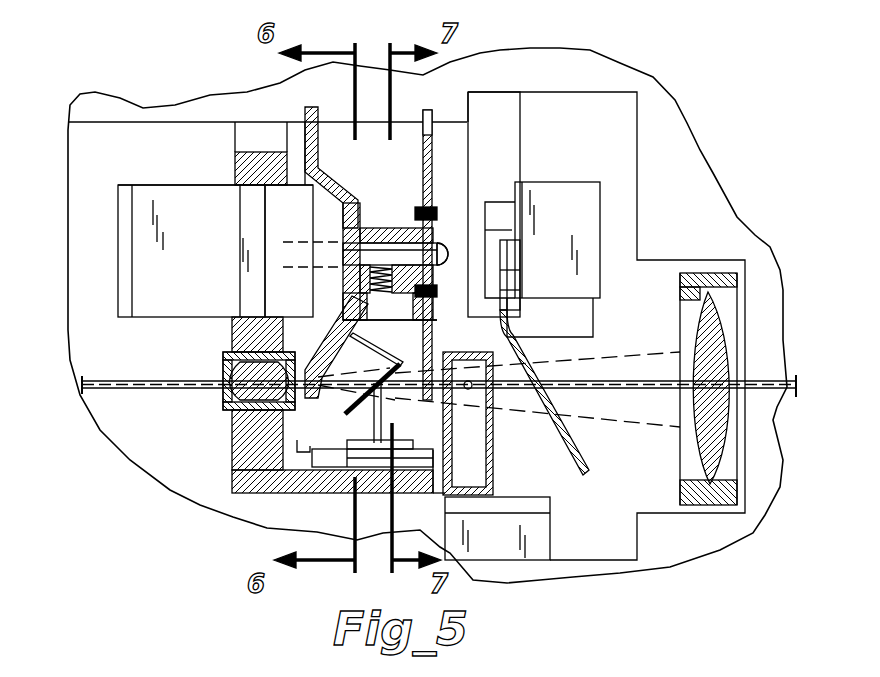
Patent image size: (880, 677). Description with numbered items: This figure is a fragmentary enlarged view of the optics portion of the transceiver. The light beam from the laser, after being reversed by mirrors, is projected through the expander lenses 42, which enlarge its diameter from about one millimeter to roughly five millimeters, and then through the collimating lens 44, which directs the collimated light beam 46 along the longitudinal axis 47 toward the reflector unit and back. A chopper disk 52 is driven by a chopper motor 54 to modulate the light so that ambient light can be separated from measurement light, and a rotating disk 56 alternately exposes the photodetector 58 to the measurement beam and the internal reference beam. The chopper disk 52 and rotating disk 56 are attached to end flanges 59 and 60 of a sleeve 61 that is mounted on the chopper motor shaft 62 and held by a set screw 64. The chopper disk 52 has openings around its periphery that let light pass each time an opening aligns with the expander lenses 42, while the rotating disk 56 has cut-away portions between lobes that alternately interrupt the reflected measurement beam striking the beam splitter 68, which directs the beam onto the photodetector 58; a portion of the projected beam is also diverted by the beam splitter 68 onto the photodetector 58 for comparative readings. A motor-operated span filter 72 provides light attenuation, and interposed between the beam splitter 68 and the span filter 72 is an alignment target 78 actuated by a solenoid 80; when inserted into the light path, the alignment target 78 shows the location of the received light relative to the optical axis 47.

The expander lenses 42 is at (222, 396).
The collimating lens 44 is at (712, 510).
The collimated light beam 46 is at (775, 398).
The longitudinal axis 47 is at (645, 382).
The chopper disk 52 is at (323, 160).
The chopper motor 54 is at (155, 190).
The rotating disk 56 is at (440, 140).
The photodetector 58 is at (338, 488).
The end flange 59 is at (368, 320).
The end flange 60 is at (437, 330).
The sleeve 61 is at (394, 228).
The chopper motor shaft 62 is at (440, 245).
The set screw 64 is at (344, 279).
The beam splitter 68 is at (345, 414).
The span filter 72 is at (580, 472).
The alignment target 78 is at (482, 458).
The solenoid 80 is at (515, 550).